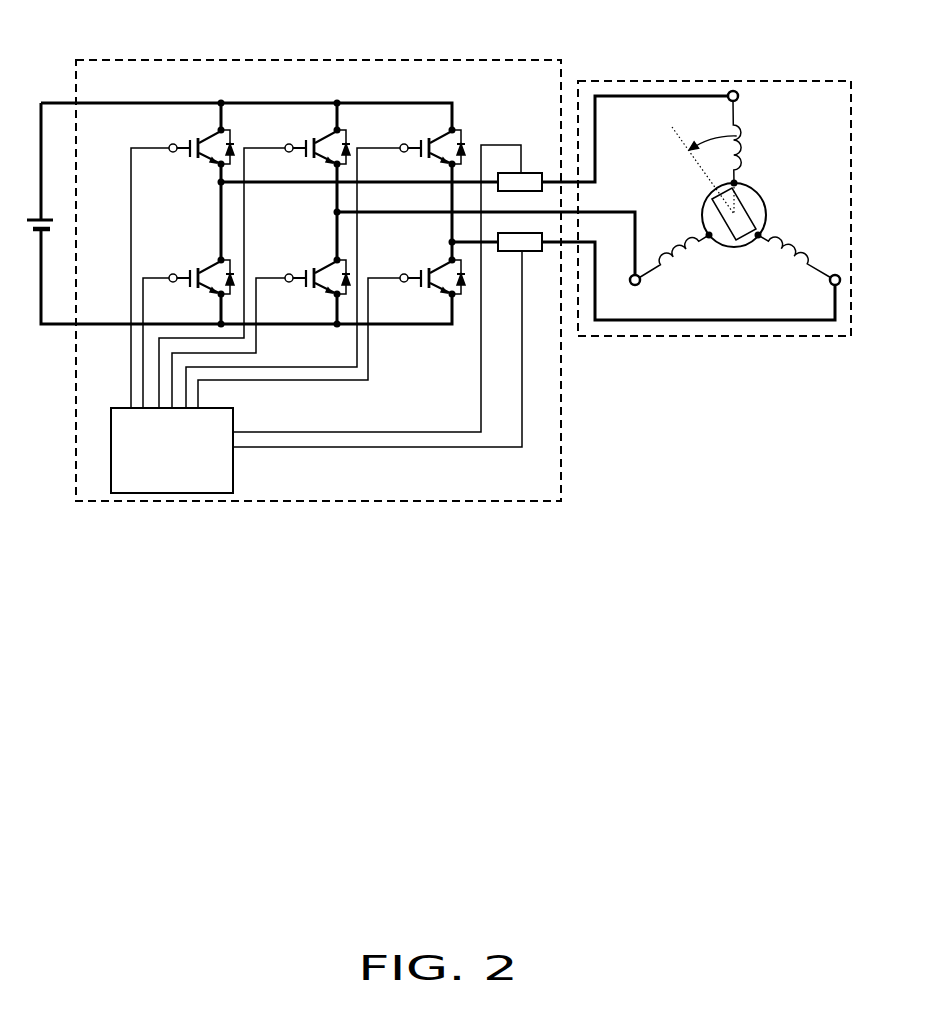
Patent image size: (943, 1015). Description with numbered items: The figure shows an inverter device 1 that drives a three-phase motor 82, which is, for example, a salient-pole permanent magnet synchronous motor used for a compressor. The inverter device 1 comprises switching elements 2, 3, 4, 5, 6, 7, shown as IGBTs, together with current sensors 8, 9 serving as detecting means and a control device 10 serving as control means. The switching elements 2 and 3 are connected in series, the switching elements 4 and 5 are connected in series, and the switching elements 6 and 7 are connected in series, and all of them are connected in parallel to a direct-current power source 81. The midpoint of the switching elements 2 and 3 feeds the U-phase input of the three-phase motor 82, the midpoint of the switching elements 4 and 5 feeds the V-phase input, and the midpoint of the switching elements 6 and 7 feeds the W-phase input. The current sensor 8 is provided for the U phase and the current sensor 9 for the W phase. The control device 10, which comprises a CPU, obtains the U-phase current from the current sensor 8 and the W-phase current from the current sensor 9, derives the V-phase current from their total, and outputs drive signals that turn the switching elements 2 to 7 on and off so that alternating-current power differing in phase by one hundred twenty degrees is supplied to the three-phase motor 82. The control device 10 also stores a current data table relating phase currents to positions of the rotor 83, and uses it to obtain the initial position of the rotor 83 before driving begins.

The inverter device 1 is at (319, 60).
The switching element 2 is at (214, 135).
The switching element 3 is at (210, 266).
The switching element 4 is at (328, 135).
The switching element 5 is at (328, 266).
The switching element 6 is at (443, 135).
The switching element 7 is at (441, 266).
The current sensor 8 is at (531, 172).
The current sensor 9 is at (529, 253).
The control device 10 is at (233, 468).
The direct-current power source 81 is at (39, 215).
The three-phase motor 82 is at (714, 81).
The rotor 83 is at (752, 217).